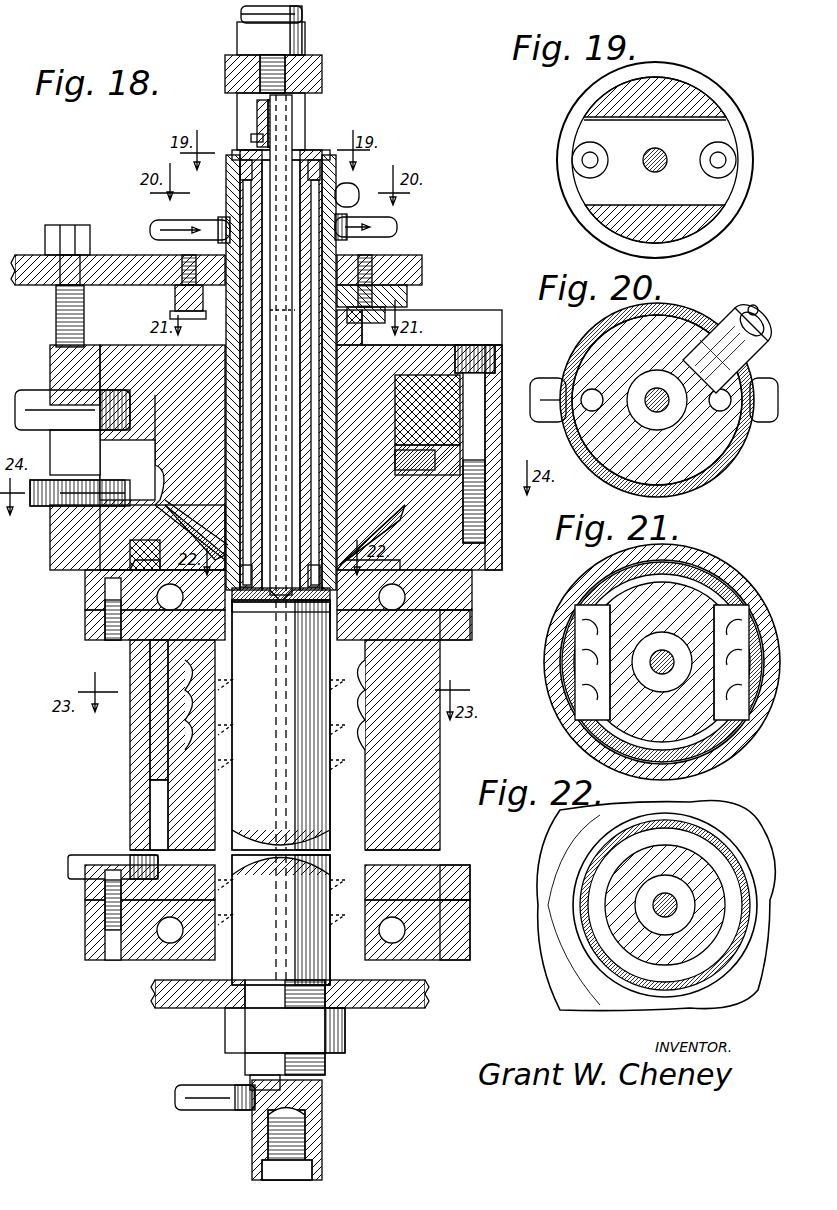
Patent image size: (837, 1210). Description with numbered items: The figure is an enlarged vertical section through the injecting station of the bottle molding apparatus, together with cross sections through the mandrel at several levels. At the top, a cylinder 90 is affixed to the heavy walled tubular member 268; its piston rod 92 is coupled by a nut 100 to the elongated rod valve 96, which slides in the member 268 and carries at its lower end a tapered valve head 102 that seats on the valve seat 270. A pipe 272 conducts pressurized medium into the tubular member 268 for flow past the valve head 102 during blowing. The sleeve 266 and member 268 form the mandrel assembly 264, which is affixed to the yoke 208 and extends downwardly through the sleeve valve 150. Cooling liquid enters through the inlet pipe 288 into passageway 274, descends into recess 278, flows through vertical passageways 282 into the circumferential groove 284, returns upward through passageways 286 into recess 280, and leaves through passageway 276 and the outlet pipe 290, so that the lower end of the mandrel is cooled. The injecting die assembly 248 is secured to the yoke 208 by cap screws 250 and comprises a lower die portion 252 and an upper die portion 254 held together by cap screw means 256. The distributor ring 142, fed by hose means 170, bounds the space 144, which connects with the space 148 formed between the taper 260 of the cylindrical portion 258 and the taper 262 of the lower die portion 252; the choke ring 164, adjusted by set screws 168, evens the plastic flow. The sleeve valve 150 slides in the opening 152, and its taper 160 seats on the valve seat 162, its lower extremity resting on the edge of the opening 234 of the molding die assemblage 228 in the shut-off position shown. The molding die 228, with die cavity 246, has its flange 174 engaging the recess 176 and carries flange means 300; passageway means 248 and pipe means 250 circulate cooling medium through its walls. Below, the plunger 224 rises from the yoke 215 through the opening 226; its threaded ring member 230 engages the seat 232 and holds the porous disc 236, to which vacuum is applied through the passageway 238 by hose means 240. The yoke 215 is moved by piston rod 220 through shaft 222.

In FIG. 18, the cylinder 90 is at (302, 15).
In FIG. 18, the piston rod 92 is at (320, 94).
In FIG. 18, the valve 96 is at (283, 215).
In FIG. 19, the valve 96 is at (663, 152).
In FIG. 20, the valve 96 is at (657, 400).
In FIG. 21, the valve 96 is at (665, 652).
In FIG. 22, the valve 96 is at (670, 898).
In FIG. 18, the nut 100 is at (257, 115).
In FIG. 18, the valve head 102 is at (285, 615).
In FIG. 18, the distributor ring 142 is at (495, 385).
In FIG. 18, the space 144 is at (160, 378).
In FIG. 18, the space 148 is at (180, 520).
In FIG. 18, the sleeve valve 150 is at (345, 312).
In FIG. 18, the opening 152 is at (325, 395).
In FIG. 18, the taper 160 is at (191, 530).
In FIG. 18, the valve seat 162 is at (401, 428).
In FIG. 18, the choke ring 164 is at (470, 500).
In FIG. 18, the set screws 168 is at (40, 505).
In FIG. 18, the hose means 170 is at (30, 395).
In FIG. 18, the molding die flange 174 is at (472, 612).
In FIG. 18, the recess 176 is at (470, 572).
In FIG. 18, the yoke 208 is at (115, 263).
In FIG. 18, the yoke 215 is at (378, 1008).
In FIG. 18, the piston rod 220 is at (262, 1175).
In FIG. 18, the shaft 222 is at (245, 1063).
In FIG. 18, the plunger 224 is at (322, 882).
In FIG. 18, the opening 226 is at (245, 985).
In FIG. 18, the molding die assemblage 228 is at (420, 720).
In FIG. 22, the molding die assemblage 228 is at (560, 885).
In FIG. 18, the ring member 230 is at (310, 608).
In FIG. 18, the seat 232 is at (260, 610).
In FIG. 18, the opening 234 is at (312, 612).
In FIG. 22, the opening 234 is at (580, 915).
In FIG. 18, the porous disc 236 is at (255, 612).
In FIG. 18, the passageway 238 is at (225, 1012).
In FIG. 18, the hose means 240 is at (180, 1105).
In FIG. 18, the die cavity 246 is at (175, 785).
In FIG. 18, the injecting die assembly 248 is at (90, 615).
In FIG. 18, the cap screws 250 is at (60, 235).
In FIG. 18, the lower die portion 252 is at (52, 565).
In FIG. 18, the upper die portion 254 is at (445, 345).
In FIG. 18, the cap screw means 256 is at (478, 350).
In FIG. 18, the cylindrical portion 258 is at (400, 460).
In FIG. 18, the taper 260 is at (365, 532).
In FIG. 18, the taper 262 is at (380, 518).
In FIG. 18, the mandrel assembly 264 is at (420, 285).
In FIG. 18, the sleeve 266 is at (338, 255).
In FIG. 19, the sleeve 266 is at (562, 140).
In FIG. 20, the sleeve 266 is at (680, 490).
In FIG. 21, the sleeve 266 is at (708, 745).
In FIG. 22, the sleeve 266 is at (600, 975).
In FIG. 18, the tubular member 268 is at (290, 155).
In FIG. 19, the tubular member 268 is at (680, 95).
In FIG. 20, the tubular member 268 is at (705, 465).
In FIG. 21, the tubular member 268 is at (628, 718).
In FIG. 22, the tubular member 268 is at (615, 870).
In FIG. 18, the valve seat 270 is at (275, 620).
In FIG. 18, the pipe 272 is at (345, 190).
In FIG. 20, the pipe 272 is at (725, 298).
In FIG. 18, the passageway 274 is at (245, 212).
In FIG. 20, the passageway 274 is at (590, 390).
In FIG. 18, the passageway 276 is at (330, 213).
In FIG. 20, the passageway 276 is at (722, 410).
In FIG. 18, the recess 278 is at (175, 300).
In FIG. 21, the recess 278 is at (563, 737).
In FIG. 18, the recess 280 is at (325, 335).
In FIG. 21, the recess 280 is at (745, 655).
In FIG. 18, the passageways 282 is at (243, 435).
In FIG. 21, the passageways 282 is at (575, 690).
In FIG. 18, the circumferential groove 284 is at (245, 598).
In FIG. 22, the circumferential groove 284 is at (595, 940).
In FIG. 18, the passageways 286 is at (316, 440).
In FIG. 21, the passageways 286 is at (740, 715).
In FIG. 18, the inlet pipe 288 is at (160, 228).
In FIG. 18, the outlet pipe 290 is at (372, 232).
In FIG. 18, the flange means 300 is at (440, 640).